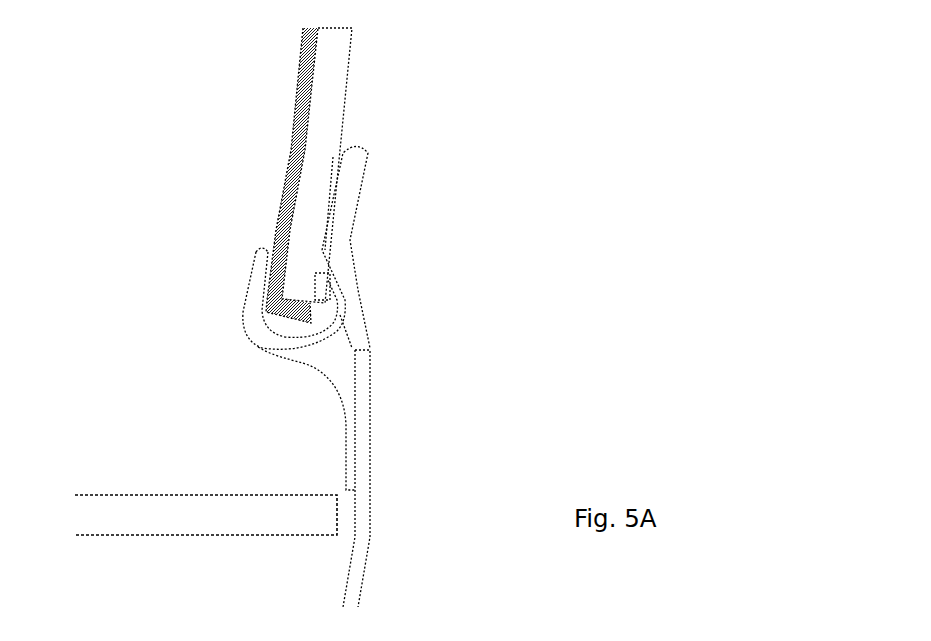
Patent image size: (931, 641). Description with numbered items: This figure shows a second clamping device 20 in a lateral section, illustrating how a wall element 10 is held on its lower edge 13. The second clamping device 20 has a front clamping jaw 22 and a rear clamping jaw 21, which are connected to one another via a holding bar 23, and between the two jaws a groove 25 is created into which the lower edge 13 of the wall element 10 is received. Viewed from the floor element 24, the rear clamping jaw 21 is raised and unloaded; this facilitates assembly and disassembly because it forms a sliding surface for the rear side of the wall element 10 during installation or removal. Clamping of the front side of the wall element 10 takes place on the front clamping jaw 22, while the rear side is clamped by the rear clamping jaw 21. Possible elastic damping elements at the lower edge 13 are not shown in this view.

The wall element 10 is at (323, 118).
The lower edge 13 is at (295, 285).
The second clamping device 20 is at (205, 287).
The rear clamping jaw 21 is at (348, 205).
The front clamping jaw 22 is at (257, 282).
The holding bar 23 is at (348, 426).
The floor element 24 is at (206, 515).
The groove 25 is at (293, 331).